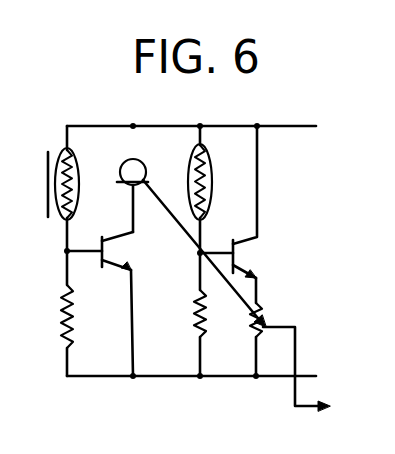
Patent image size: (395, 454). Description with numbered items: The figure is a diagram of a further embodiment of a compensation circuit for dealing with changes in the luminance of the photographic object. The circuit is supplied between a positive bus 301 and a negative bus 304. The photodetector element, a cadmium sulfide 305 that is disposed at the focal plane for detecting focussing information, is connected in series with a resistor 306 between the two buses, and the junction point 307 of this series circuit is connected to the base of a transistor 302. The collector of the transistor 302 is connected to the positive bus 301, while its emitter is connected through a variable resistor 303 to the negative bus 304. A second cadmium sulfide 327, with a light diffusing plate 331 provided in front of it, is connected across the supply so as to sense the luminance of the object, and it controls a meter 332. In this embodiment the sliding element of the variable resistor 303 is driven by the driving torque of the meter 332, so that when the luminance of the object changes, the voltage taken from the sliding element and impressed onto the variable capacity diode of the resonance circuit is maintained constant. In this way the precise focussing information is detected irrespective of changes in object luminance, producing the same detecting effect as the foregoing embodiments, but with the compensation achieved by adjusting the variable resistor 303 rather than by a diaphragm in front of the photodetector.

The positive bus 301 is at (226, 125).
The transistor 302 is at (238, 257).
The variable resistor 303 is at (270, 322).
The negative bus 304 is at (181, 377).
The cadmium sulfide photodetector element 305 is at (212, 176).
The resistor 306 is at (196, 297).
The junction point 307 is at (198, 255).
The cadmium sulfide 327 is at (80, 170).
The light diffusing plate 331 is at (49, 152).
The meter 332 is at (147, 168).